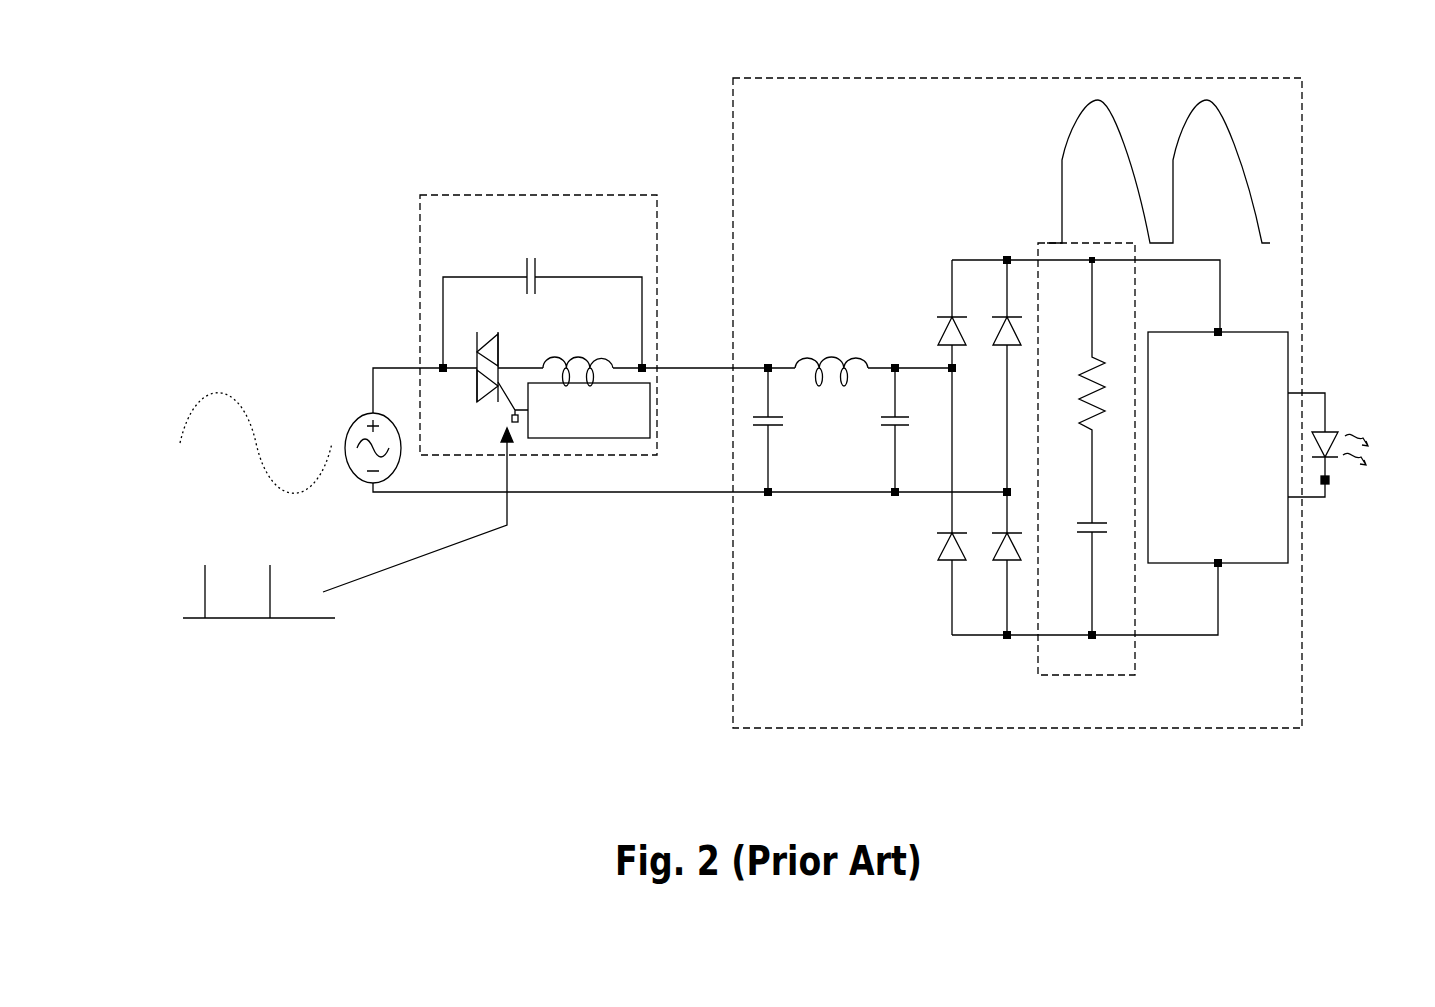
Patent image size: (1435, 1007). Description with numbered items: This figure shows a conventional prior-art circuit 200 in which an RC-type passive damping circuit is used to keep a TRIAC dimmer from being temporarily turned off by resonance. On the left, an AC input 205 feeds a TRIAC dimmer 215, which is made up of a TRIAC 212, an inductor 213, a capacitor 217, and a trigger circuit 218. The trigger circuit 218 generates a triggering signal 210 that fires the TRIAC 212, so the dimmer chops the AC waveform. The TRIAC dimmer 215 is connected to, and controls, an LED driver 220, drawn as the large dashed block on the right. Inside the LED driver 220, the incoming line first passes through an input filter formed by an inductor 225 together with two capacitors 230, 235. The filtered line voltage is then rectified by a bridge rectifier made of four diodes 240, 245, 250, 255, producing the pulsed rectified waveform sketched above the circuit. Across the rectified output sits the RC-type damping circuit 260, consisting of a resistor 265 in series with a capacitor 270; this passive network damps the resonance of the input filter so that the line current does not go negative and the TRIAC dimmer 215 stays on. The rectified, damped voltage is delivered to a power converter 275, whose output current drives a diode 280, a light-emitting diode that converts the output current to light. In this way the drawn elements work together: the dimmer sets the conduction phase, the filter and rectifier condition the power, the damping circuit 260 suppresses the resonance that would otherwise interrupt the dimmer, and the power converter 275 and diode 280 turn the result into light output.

The LED lighting system 200 is at (267, 83).
The AC input 205 is at (207, 388).
The triggering signal 210 is at (195, 582).
The TRIAC 212 is at (498, 354).
The inductor 213 is at (580, 343).
The TRIAC dimmer 215 is at (527, 192).
The capacitor 217 is at (538, 266).
The trigger circuit 218 is at (650, 438).
The LED driver 220 is at (930, 73).
The input filter inductor 225 is at (820, 347).
The input filter capacitor 230 is at (792, 417).
The input filter capacitor 235 is at (888, 428).
The bridge rectifier diode 240 is at (940, 317).
The bridge rectifier diode 245 is at (938, 559).
The bridge rectifier diode 250 is at (1006, 316).
The bridge rectifier diode 255 is at (1007, 565).
The RC-type damping circuit 260 is at (1032, 662).
The resistor 265 is at (1090, 378).
The capacitor 270 is at (1088, 520).
The power converter 275 is at (1230, 323).
The diode 280 is at (1340, 428).